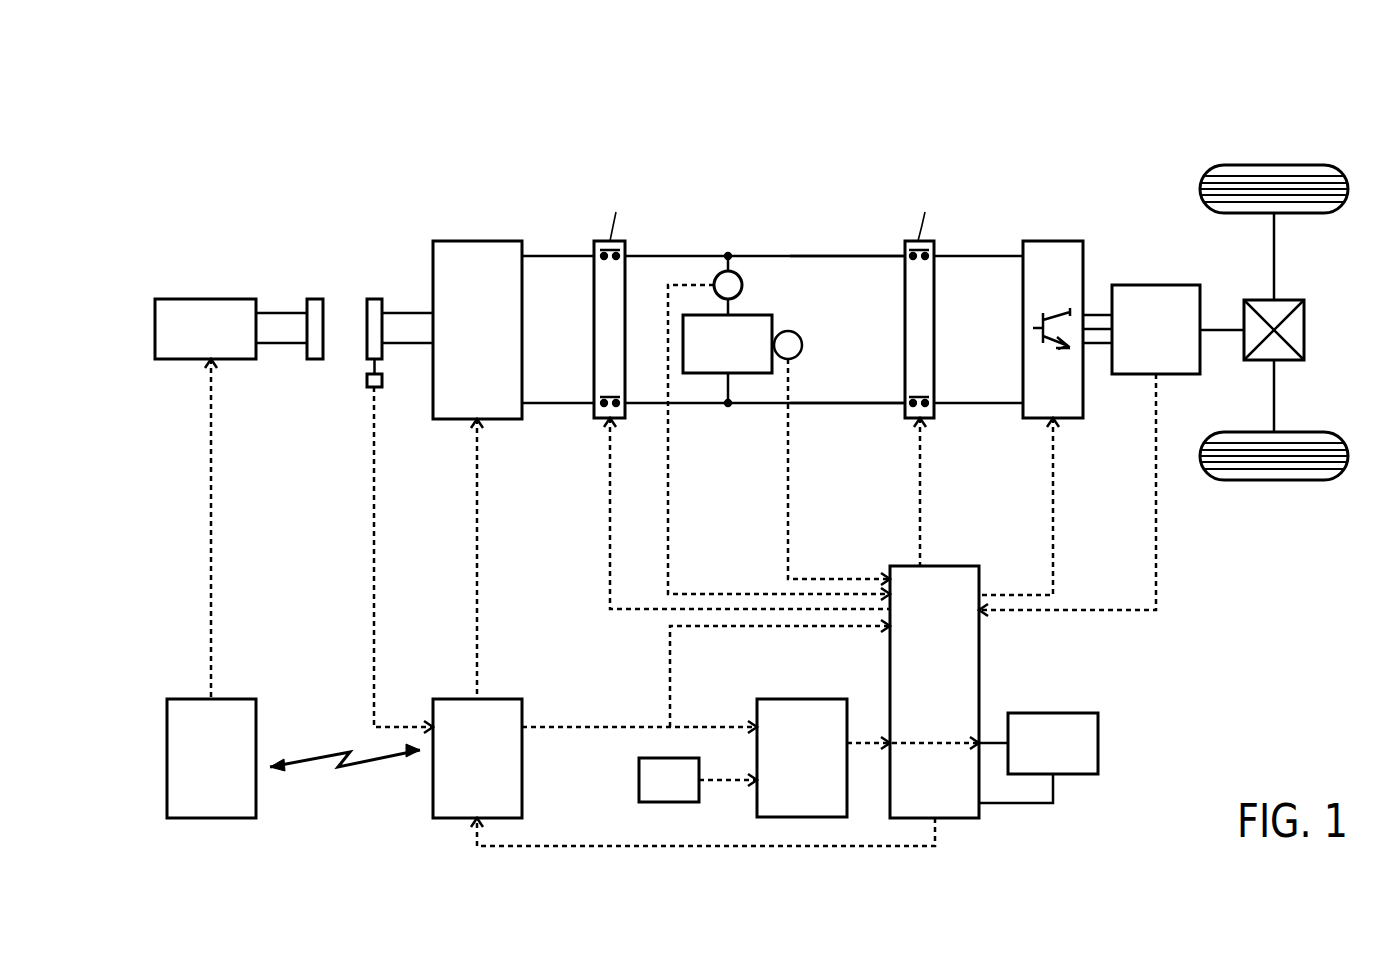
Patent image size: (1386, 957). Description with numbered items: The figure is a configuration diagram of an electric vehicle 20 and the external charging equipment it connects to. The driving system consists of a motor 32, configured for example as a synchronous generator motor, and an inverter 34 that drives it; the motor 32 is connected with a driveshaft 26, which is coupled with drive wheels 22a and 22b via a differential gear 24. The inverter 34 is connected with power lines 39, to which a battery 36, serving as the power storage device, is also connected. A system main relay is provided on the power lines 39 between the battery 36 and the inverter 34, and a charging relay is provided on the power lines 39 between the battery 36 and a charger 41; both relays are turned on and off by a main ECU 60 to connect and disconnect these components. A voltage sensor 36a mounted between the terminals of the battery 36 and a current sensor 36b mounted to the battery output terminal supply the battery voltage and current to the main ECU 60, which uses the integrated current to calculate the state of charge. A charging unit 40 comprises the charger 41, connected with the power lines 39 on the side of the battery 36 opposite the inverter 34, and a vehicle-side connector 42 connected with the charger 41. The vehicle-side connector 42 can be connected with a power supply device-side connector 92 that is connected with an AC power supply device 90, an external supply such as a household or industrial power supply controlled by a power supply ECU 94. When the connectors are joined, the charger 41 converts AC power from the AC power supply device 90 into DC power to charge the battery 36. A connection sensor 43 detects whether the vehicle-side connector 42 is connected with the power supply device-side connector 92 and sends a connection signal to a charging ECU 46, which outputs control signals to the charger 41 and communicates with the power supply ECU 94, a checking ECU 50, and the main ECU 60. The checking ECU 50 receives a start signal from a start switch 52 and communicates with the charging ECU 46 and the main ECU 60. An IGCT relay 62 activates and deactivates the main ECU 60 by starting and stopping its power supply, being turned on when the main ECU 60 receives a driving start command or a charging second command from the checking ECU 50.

The electric vehicle 20 is at (987, 116).
The drive wheel 22a is at (1275, 165).
The drive wheel 22b is at (1275, 480).
The differential gear 24 is at (1289, 300).
The driveshaft 26 is at (1215, 328).
The motor 32 is at (1156, 285).
The inverter 34 is at (1053, 241).
The battery 36 is at (750, 313).
The voltage sensor 36a is at (790, 331).
The current sensor 36b is at (720, 268).
The power lines 39 is at (868, 256).
The charging unit 40 is at (439, 190).
The charger 41 is at (478, 241).
The vehicle-side connector 42 is at (374, 299).
The connection sensor 43 is at (383, 382).
The charging ECU 46 is at (500, 699).
The checking ECU 50 is at (803, 699).
The start switch 52 is at (639, 778).
The main ECU 60 is at (950, 566).
The IGCT relay 62 is at (1053, 713).
The AC power supply device 90 is at (211, 299).
The power supply device-side connector 92 is at (315, 299).
The power supply ECU 94 is at (233, 699).